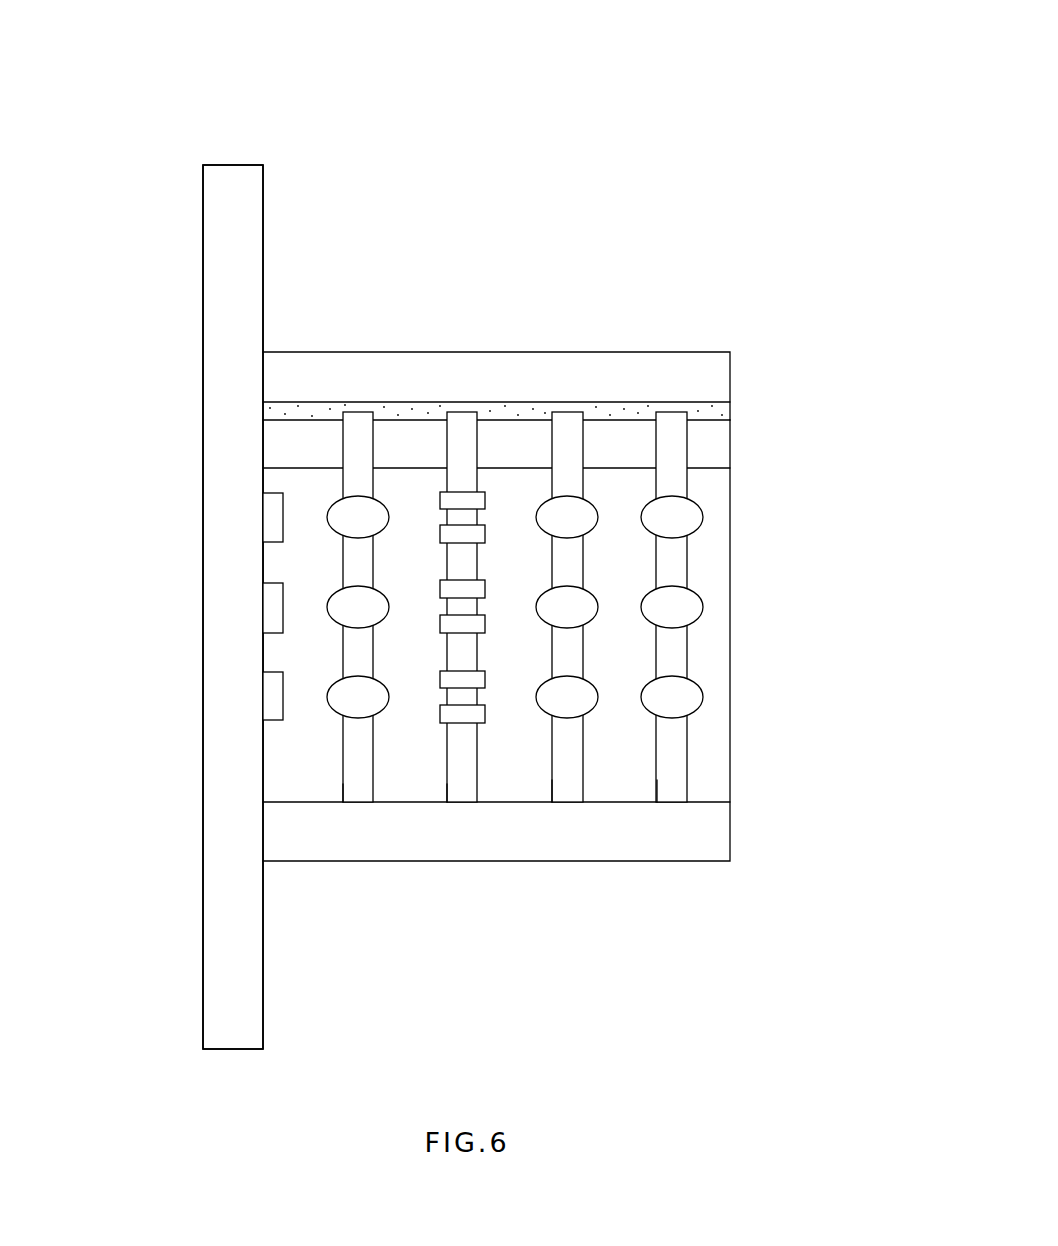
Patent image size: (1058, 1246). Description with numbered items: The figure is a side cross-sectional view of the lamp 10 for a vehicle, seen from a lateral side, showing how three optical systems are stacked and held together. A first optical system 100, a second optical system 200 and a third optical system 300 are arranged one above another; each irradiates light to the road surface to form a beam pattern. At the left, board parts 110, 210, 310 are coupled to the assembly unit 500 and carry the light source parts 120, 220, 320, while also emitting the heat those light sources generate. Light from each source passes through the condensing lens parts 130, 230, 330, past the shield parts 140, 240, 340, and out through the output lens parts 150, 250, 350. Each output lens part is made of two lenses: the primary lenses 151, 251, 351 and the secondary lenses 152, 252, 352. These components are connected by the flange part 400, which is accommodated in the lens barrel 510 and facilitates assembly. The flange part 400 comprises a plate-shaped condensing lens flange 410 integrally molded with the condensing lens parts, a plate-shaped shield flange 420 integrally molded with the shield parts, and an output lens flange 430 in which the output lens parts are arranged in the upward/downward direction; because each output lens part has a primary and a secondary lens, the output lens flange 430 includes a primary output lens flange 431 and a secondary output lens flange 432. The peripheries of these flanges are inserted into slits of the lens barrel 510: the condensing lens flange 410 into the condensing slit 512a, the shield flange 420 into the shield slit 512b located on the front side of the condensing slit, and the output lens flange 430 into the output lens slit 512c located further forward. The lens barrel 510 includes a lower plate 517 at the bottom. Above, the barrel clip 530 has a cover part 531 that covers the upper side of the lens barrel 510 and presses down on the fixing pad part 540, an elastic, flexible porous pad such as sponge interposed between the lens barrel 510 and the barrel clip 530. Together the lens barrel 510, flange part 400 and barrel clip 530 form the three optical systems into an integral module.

The lamp for a vehicle 10 is at (165, 26).
The first optical system 100 is at (130, 649).
The first board part 110 is at (233, 193).
The first light source part 120 is at (272, 695).
The first condensing lens part 130 is at (352, 694).
The first shield part 140 is at (460, 713).
The first output lens part 150 is at (798, 677).
The (1-1)-th lens 151 is at (566, 698).
The (1-2)-th lens 152 is at (682, 697).
The second optical system 200 is at (130, 562).
The second board part 210 is at (233, 607).
The second light source part 220 is at (272, 607).
The second condensing lens part 230 is at (352, 604).
The second shield part 240 is at (462, 623).
The second output lens part 250 is at (798, 587).
The (2-1)-th lens 251 is at (566, 608).
The (2-2)-th lens 252 is at (682, 607).
The third optical system 300 is at (130, 473).
The third board part 310 is at (233, 607).
The third light source part 320 is at (272, 517).
The third condensing lens part 330 is at (352, 514).
The third shield part 340 is at (463, 499).
The third output lens part 350 is at (798, 497).
The (3-1)-th lens 351 is at (566, 518).
The (3-2)-th lens 352 is at (682, 517).
The flange part 400 is at (360, 287).
The condensing lens flange 410 is at (362, 420).
The shield flange 420 is at (463, 420).
The output lens flange 430 is at (692, 297).
The primary output lens flange 431 is at (566, 420).
The secondary output lens flange 432 is at (671, 420).
The assembly unit 500 is at (770, 113).
The lens barrel 510 is at (587, 486).
The condensing slit 512a is at (343, 784).
The shield slit 512b is at (447, 784).
The output lens slit 512c is at (552, 780).
The lower plate 517 is at (703, 832).
The barrel clip 530 is at (595, 290).
The cover part 531 is at (715, 373).
The fixing pad part 540 is at (713, 410).